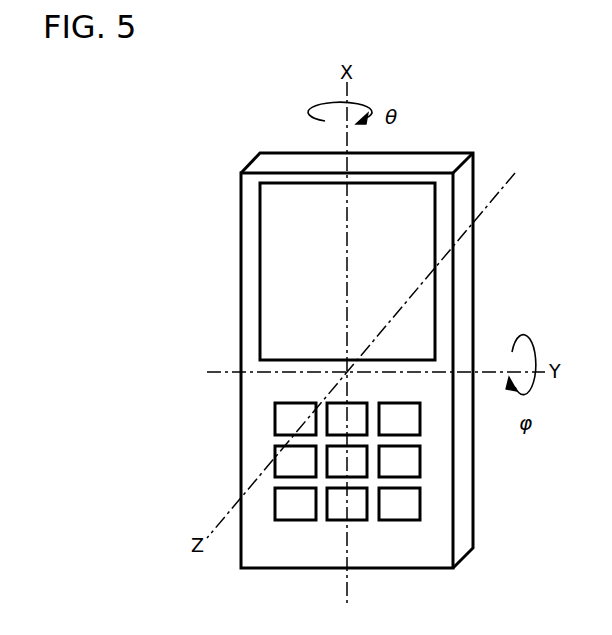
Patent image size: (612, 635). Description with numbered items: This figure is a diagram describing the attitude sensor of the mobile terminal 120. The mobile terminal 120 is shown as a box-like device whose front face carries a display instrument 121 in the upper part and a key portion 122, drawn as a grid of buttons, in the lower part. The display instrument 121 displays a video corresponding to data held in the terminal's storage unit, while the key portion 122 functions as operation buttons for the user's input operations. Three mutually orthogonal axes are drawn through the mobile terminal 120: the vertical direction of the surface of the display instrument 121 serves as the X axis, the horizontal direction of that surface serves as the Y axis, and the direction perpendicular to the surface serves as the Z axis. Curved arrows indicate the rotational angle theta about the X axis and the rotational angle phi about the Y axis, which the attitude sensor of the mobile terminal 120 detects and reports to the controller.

The mobile terminal 120 is at (511, 88).
The display instrument 121 is at (260, 267).
The key portion 122 is at (275, 418).